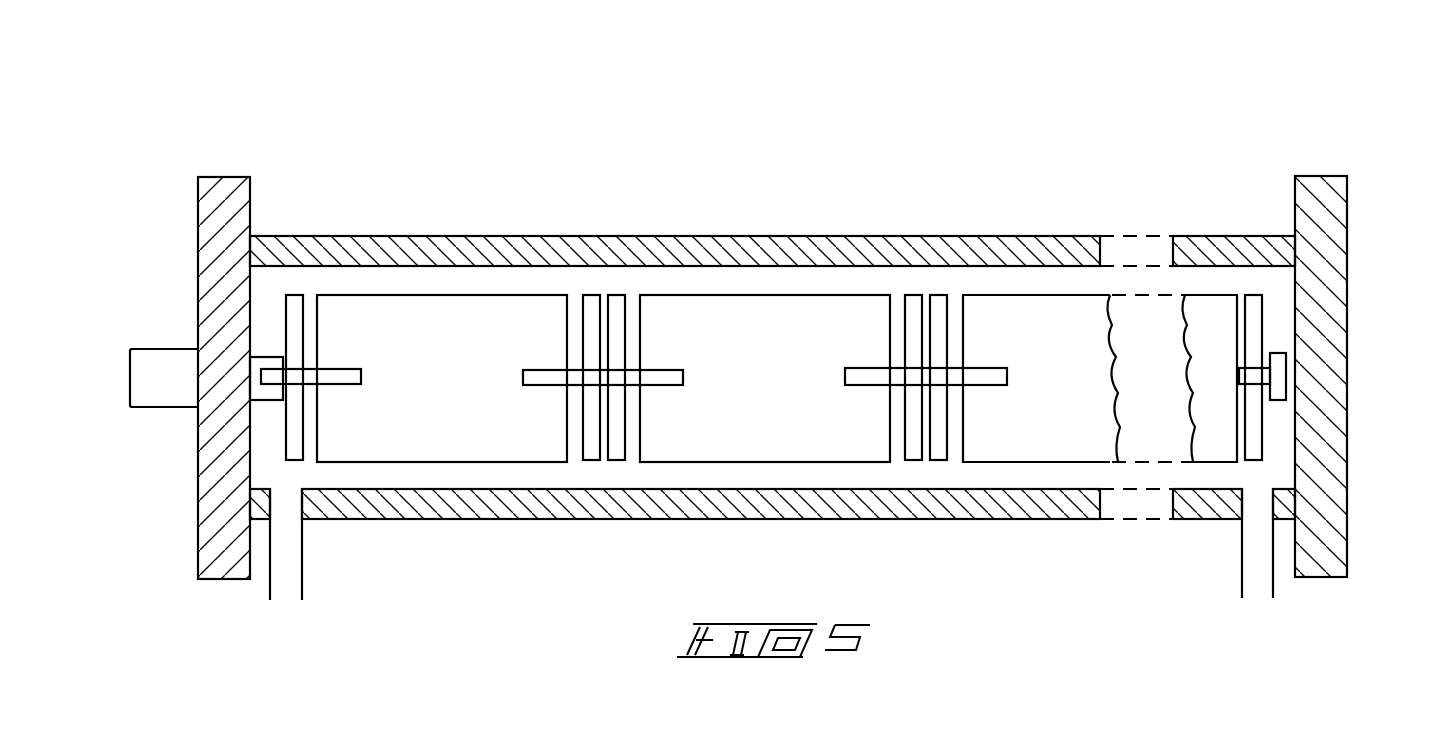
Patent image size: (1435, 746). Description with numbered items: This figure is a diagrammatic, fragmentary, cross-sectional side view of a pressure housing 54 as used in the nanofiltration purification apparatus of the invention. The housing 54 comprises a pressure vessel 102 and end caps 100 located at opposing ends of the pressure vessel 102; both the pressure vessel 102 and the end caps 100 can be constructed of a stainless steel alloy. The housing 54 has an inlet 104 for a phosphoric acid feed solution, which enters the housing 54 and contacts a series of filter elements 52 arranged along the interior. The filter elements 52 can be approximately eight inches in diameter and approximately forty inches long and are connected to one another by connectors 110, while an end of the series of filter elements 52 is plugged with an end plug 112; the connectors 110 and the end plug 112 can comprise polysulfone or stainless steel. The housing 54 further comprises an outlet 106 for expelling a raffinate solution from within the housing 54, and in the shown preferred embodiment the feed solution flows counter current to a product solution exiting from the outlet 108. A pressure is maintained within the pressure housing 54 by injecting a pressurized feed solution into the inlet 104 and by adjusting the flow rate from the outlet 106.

The pressure housing 54 is at (1045, 102).
The end caps 100 is at (225, 193).
The pressure vessel 102 is at (427, 248).
The inlet 104 is at (285, 558).
The outlet 106 is at (1258, 557).
The outlet 108 is at (172, 367).
The connectors 110 is at (345, 378).
The end plug 112 is at (1277, 375).
The filter elements 52 is at (452, 362).